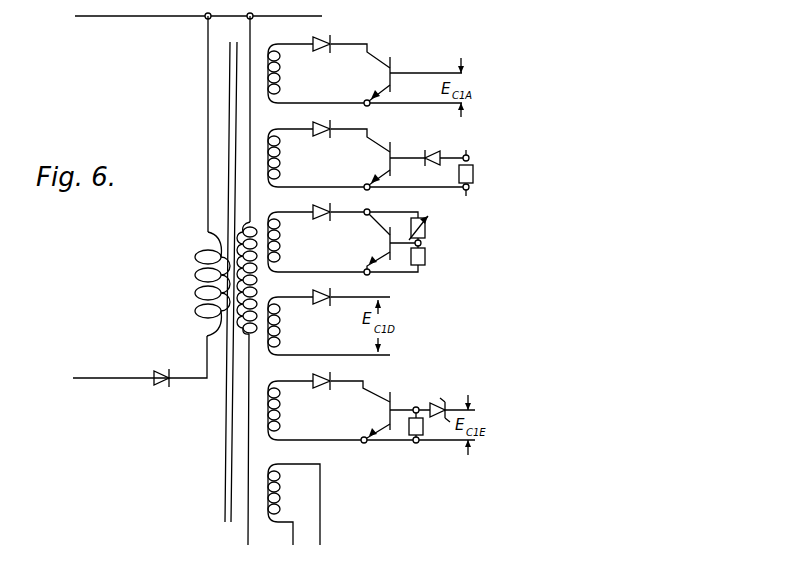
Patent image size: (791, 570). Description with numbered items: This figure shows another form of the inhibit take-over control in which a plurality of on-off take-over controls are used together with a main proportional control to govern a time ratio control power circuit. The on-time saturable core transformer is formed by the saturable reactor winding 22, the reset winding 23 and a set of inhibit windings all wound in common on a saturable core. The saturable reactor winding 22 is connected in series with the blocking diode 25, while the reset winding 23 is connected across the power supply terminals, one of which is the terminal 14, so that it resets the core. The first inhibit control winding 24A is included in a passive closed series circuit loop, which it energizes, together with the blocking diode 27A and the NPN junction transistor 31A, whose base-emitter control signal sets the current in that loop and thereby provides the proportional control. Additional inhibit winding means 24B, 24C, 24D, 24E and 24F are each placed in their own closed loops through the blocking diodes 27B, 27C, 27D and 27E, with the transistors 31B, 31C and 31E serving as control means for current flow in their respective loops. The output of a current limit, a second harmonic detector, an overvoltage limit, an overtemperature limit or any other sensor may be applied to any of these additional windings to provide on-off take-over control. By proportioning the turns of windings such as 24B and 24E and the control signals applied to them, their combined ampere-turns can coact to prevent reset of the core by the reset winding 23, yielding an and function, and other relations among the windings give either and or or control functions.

The power supply terminal 14 is at (150, 17).
The saturable reactor winding 22 is at (195, 278).
The reset winding 23 is at (258, 283).
The blocking diode 25 is at (157, 386).
The first inhibit control winding 24A is at (283, 77).
The additional take-over inhibit control winding 24B is at (283, 162).
The additional inhibit winding means 24C is at (283, 242).
The additional inhibit winding means 24D is at (283, 322).
The additional inhibit winding means 24E is at (283, 408).
The additional inhibit winding means 24F is at (281, 507).
The blocking diode 27A is at (332, 36).
The blocking diode 27B is at (332, 121).
The blocking diode 27C is at (332, 204).
The blocking diode 27D is at (332, 289).
The blocking diode 27E is at (332, 373).
The NPN junction transistor 31A is at (392, 63).
The NPN junction transistor 31B is at (392, 146).
The NPN junction transistor 31C is at (388, 243).
The NPN junction transistor 31E is at (392, 398).